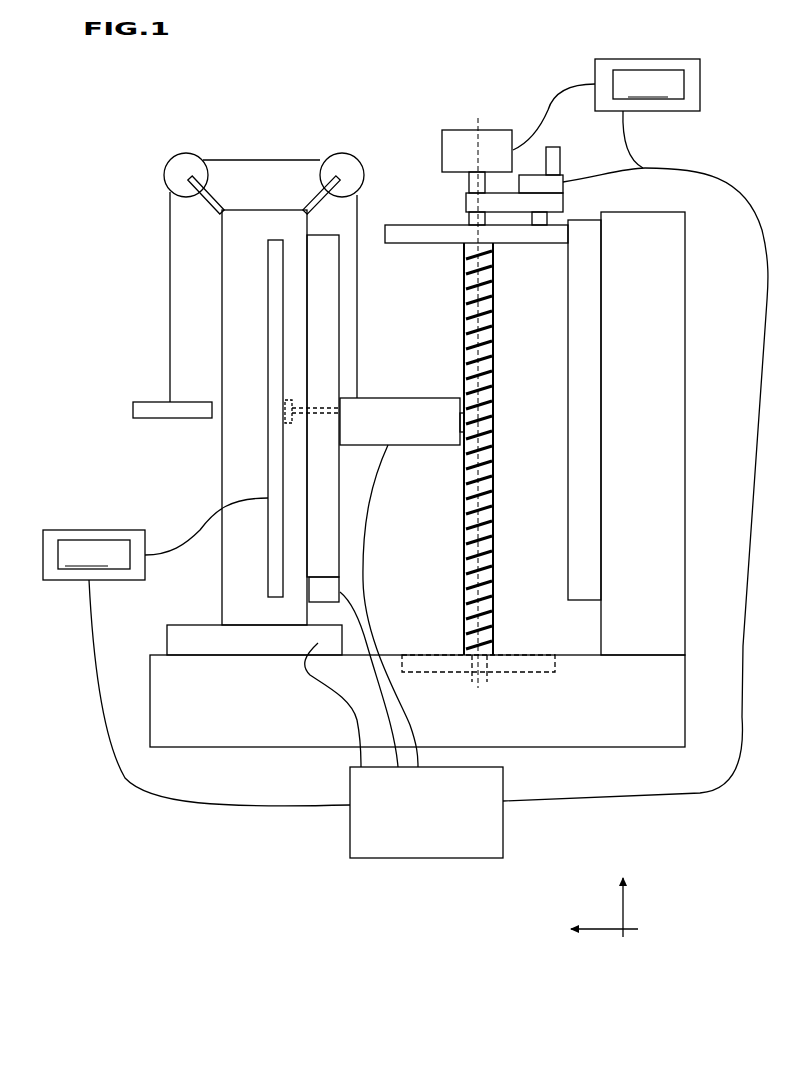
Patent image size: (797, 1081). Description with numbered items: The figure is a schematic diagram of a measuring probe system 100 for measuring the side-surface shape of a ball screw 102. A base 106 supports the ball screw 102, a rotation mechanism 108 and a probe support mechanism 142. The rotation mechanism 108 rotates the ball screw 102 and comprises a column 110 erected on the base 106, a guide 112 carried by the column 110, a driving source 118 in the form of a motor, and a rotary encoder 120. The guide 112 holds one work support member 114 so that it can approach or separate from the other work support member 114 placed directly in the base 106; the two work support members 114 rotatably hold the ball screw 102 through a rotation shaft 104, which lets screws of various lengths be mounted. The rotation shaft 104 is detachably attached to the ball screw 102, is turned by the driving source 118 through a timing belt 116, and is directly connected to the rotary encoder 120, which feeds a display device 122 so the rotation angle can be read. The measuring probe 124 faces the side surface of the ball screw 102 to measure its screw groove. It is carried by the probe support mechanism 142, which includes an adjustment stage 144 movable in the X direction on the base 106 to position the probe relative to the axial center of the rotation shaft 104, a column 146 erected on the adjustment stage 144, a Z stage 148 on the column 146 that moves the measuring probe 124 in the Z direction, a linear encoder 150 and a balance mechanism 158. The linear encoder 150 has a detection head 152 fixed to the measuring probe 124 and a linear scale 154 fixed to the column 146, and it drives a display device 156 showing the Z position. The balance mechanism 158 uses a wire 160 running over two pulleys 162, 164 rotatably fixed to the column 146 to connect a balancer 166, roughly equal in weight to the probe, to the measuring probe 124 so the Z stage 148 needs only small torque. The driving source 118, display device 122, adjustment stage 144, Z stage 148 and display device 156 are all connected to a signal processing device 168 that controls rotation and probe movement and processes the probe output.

The measuring probe system 100 is at (451, 61).
The ball screw 102 is at (490, 472).
The rotation shaft 104 is at (478, 218).
The base 106 is at (564, 733).
The rotation mechanism 108 is at (663, 665).
The column 110 is at (668, 646).
The guide 112 is at (600, 529).
The work support member 114 is at (530, 237).
The timing belt 116 is at (547, 202).
The driving source 118 is at (553, 187).
The rotary encoder 120 is at (468, 138).
The display device 122 is at (620, 66).
The measuring probe 124 is at (424, 392).
The probe support mechanism 142 is at (196, 670).
The adjustment stage 144 is at (222, 653).
The column 146 is at (267, 623).
The Z stage 148 is at (339, 576).
The linear encoder 150 is at (259, 393).
The detection head 152 is at (292, 412).
The linear scale 154 is at (270, 433).
The display device 156 is at (62, 532).
The balance mechanism 158 is at (150, 220).
The wire 160 is at (257, 161).
The pulley 162 is at (337, 193).
The pulley 164 is at (186, 163).
The balancer 166 is at (178, 408).
The signal processing device 168 is at (435, 826).